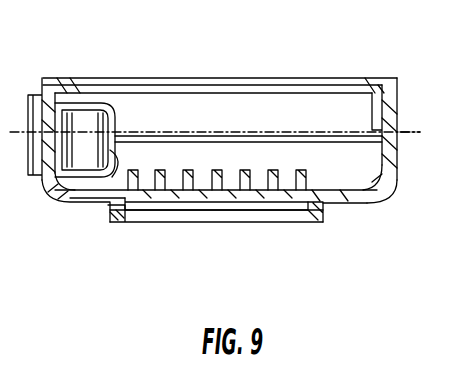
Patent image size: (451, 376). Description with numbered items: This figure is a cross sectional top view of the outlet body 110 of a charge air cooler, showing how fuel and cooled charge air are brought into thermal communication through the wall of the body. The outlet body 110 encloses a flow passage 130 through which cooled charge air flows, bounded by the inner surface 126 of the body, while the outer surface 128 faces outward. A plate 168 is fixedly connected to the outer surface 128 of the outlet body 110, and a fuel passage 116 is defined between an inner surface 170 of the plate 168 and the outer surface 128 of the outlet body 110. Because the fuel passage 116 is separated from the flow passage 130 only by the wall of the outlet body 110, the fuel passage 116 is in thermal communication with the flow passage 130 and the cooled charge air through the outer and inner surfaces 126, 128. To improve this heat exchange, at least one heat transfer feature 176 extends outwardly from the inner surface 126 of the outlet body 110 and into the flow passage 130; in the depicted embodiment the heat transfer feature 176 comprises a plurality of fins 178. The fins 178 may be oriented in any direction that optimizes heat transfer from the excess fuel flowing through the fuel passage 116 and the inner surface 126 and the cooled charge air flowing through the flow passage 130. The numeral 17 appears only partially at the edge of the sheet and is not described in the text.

The lighting assembly 17 is at (425, 71).
The outlet body 110 is at (352, 76).
The fuel passage 116 is at (325, 206).
The inner surface 126 is at (388, 163).
The outer surface 128 is at (70, 203).
The flow passage 130 is at (215, 123).
The plate 168 is at (210, 215).
The inner surface 170 is at (192, 203).
The heat transfer feature 176 is at (245, 168).
The fins 178 is at (133, 170).